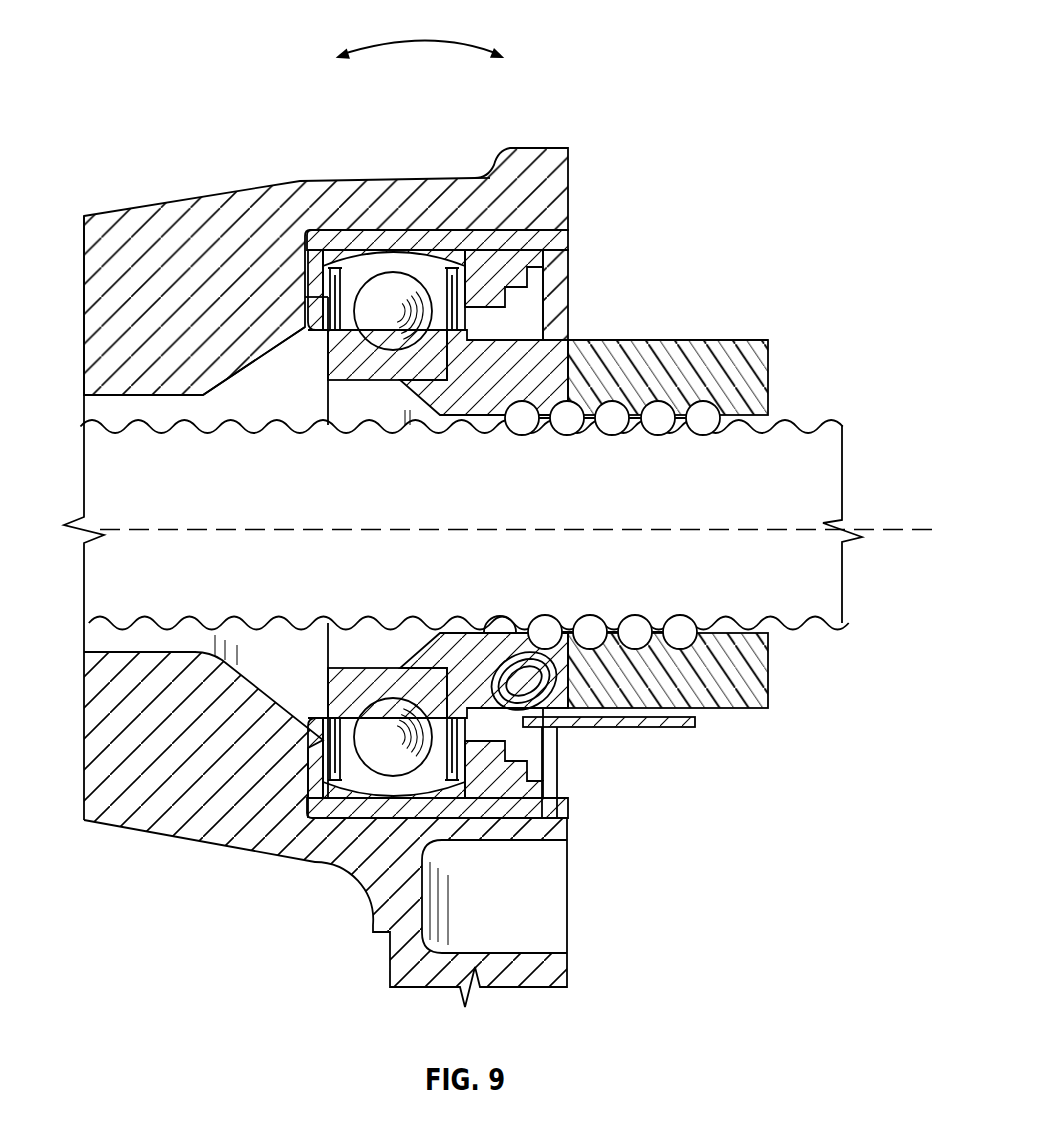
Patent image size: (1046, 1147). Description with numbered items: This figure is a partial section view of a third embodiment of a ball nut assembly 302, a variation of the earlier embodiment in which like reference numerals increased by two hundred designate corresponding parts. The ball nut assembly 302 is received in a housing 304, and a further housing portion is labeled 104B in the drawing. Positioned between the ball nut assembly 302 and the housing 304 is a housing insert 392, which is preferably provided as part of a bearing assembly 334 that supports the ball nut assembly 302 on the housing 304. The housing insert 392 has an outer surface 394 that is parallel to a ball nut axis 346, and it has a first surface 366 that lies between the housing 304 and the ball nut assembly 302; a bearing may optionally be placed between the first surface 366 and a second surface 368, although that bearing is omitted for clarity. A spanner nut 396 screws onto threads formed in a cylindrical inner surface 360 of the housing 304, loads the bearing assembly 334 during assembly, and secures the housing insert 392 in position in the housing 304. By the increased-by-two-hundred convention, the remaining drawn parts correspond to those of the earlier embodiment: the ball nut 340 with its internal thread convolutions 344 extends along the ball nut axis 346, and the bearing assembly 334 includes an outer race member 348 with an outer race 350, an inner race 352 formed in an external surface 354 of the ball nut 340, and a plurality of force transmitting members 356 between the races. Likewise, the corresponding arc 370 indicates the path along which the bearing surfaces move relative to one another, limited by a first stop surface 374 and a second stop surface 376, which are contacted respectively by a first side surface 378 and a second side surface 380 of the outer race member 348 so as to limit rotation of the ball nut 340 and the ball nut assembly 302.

The housing 104B is at (118, 248).
The ball nut assembly 302 is at (741, 292).
The housing 304 is at (254, 918).
The bearing assembly 334 is at (290, 355).
The nut 340 is at (745, 380).
The shaft 344 is at (793, 430).
The ball nut axis 346 is at (870, 530).
The outer race 348 is at (368, 275).
The ball 350 is at (436, 274).
The hub 352 is at (447, 420).
The nut surface 354 is at (655, 340).
The inner race 356 is at (390, 318).
The cylindrical inner surface 360 is at (556, 215).
The first surface 366 is at (362, 268).
The second surface 368 is at (522, 435).
The angular range 370 is at (431, 40).
The housing lip 374 is at (308, 268).
The stepped spacer 376 is at (515, 275).
The seal 378 is at (330, 262).
The cover plate 380 is at (562, 243).
The housing insert 392 is at (458, 250).
The outer surface 394 is at (440, 240).
The spanner nut 396 is at (557, 222).